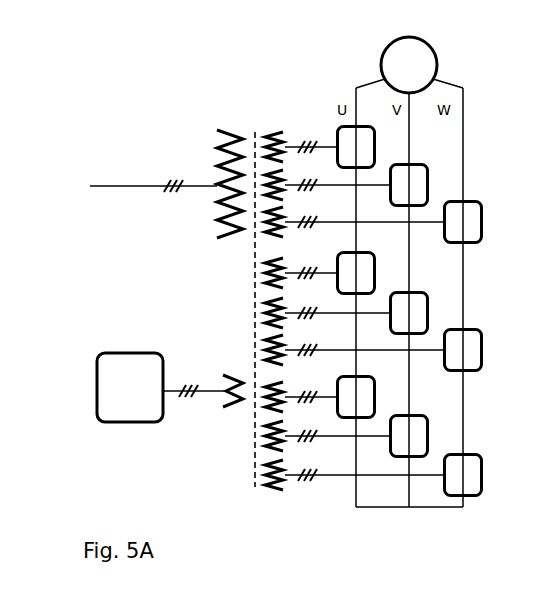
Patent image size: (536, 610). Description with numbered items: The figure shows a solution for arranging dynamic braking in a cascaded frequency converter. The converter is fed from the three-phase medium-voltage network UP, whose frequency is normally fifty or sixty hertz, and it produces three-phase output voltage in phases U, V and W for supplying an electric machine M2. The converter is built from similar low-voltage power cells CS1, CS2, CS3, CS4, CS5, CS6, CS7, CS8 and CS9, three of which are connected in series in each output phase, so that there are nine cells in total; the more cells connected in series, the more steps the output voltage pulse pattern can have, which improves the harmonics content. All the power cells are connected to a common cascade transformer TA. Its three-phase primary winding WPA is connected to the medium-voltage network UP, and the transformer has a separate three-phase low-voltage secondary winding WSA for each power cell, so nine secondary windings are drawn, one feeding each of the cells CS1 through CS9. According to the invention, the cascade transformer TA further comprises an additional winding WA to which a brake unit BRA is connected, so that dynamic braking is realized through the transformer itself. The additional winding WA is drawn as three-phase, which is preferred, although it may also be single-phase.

The electric machine M2 is at (409, 65).
The low-voltage power cell CS1 is at (356, 147).
The low-voltage power cell CS2 is at (409, 185).
The low-voltage power cell CS3 is at (463, 222).
The low-voltage power cell CS4 is at (356, 273).
The low-voltage power cell CS5 is at (409, 313).
The low-voltage power cell CS6 is at (463, 350).
The low-voltage power cell CS7 is at (356, 397).
The low-voltage power cell CS8 is at (409, 436).
The low-voltage power cell CS9 is at (463, 475).
The brake unit BRA is at (160, 387).
The cascade transformer TA is at (254, 296).
The medium-voltage network UP is at (153, 176).
The three-phase primary winding WPA is at (224, 197).
The additional winding WA is at (224, 406).
The three-phase low-voltage secondary winding WSA is at (291, 327).